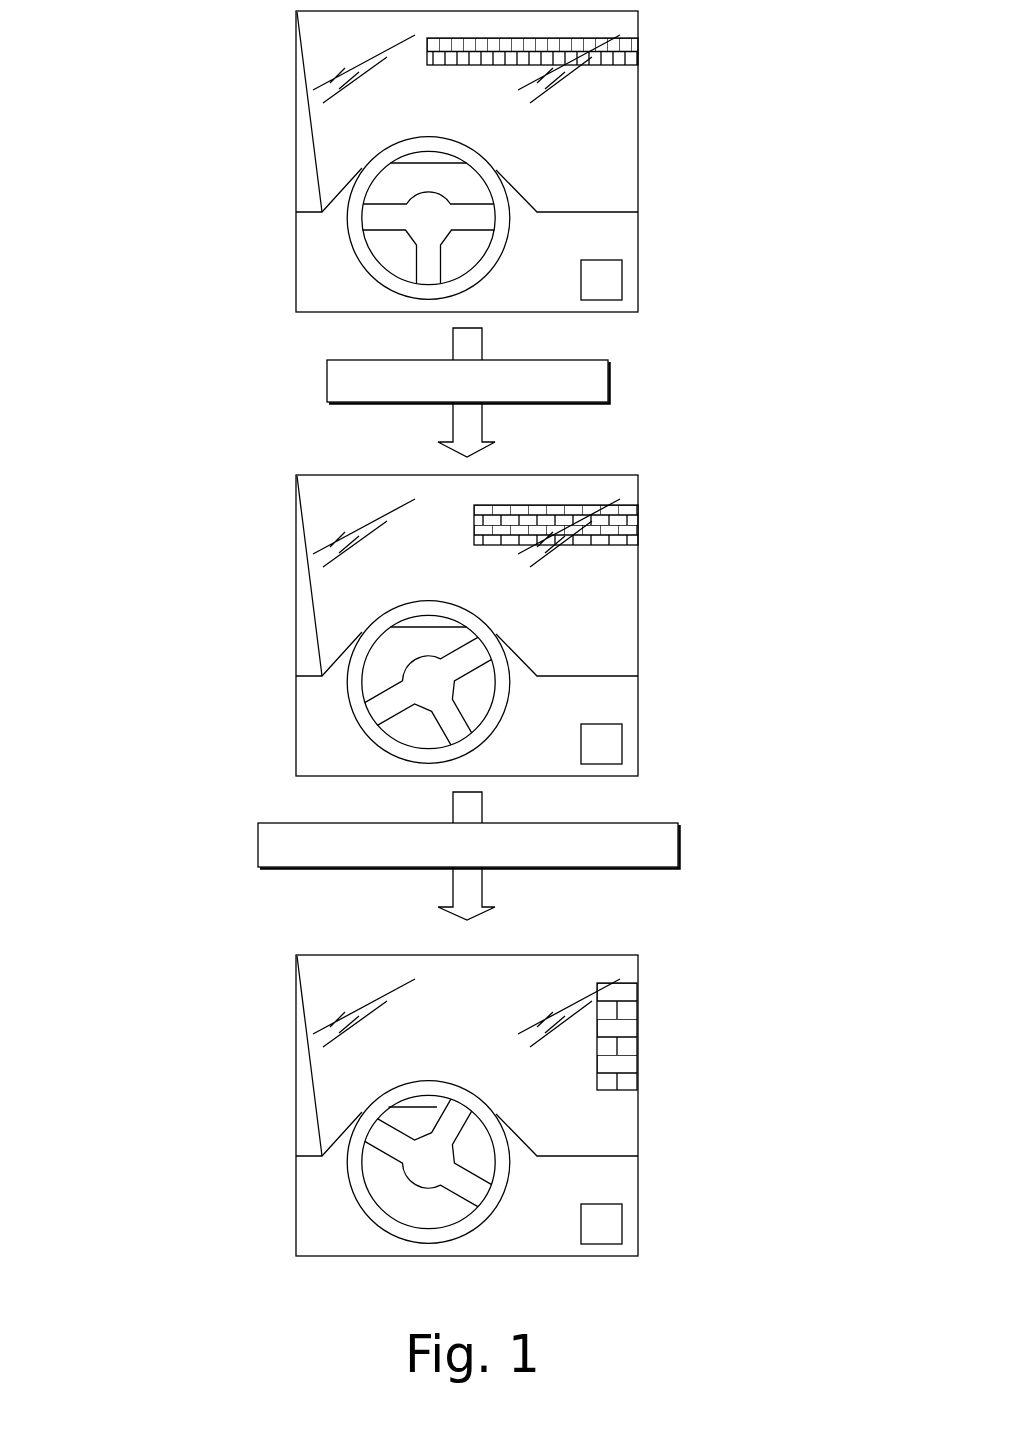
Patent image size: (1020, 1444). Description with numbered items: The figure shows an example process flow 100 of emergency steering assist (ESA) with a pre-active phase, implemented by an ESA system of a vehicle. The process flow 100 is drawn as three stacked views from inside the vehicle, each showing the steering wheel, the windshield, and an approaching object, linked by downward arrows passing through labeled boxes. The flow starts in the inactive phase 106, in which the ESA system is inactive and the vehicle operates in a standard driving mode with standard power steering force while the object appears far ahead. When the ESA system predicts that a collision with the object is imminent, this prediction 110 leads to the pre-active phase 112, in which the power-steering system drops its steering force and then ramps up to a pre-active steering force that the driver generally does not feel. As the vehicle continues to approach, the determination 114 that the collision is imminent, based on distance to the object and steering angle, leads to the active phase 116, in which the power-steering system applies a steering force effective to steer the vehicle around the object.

The process flow 100 is at (815, 42).
The inactive phase 106 is at (267, 95).
The prediction 110 is at (535, 391).
The pre-active phase 112 is at (274, 552).
The determination 114 is at (553, 856).
The active phase 116 is at (267, 1060).